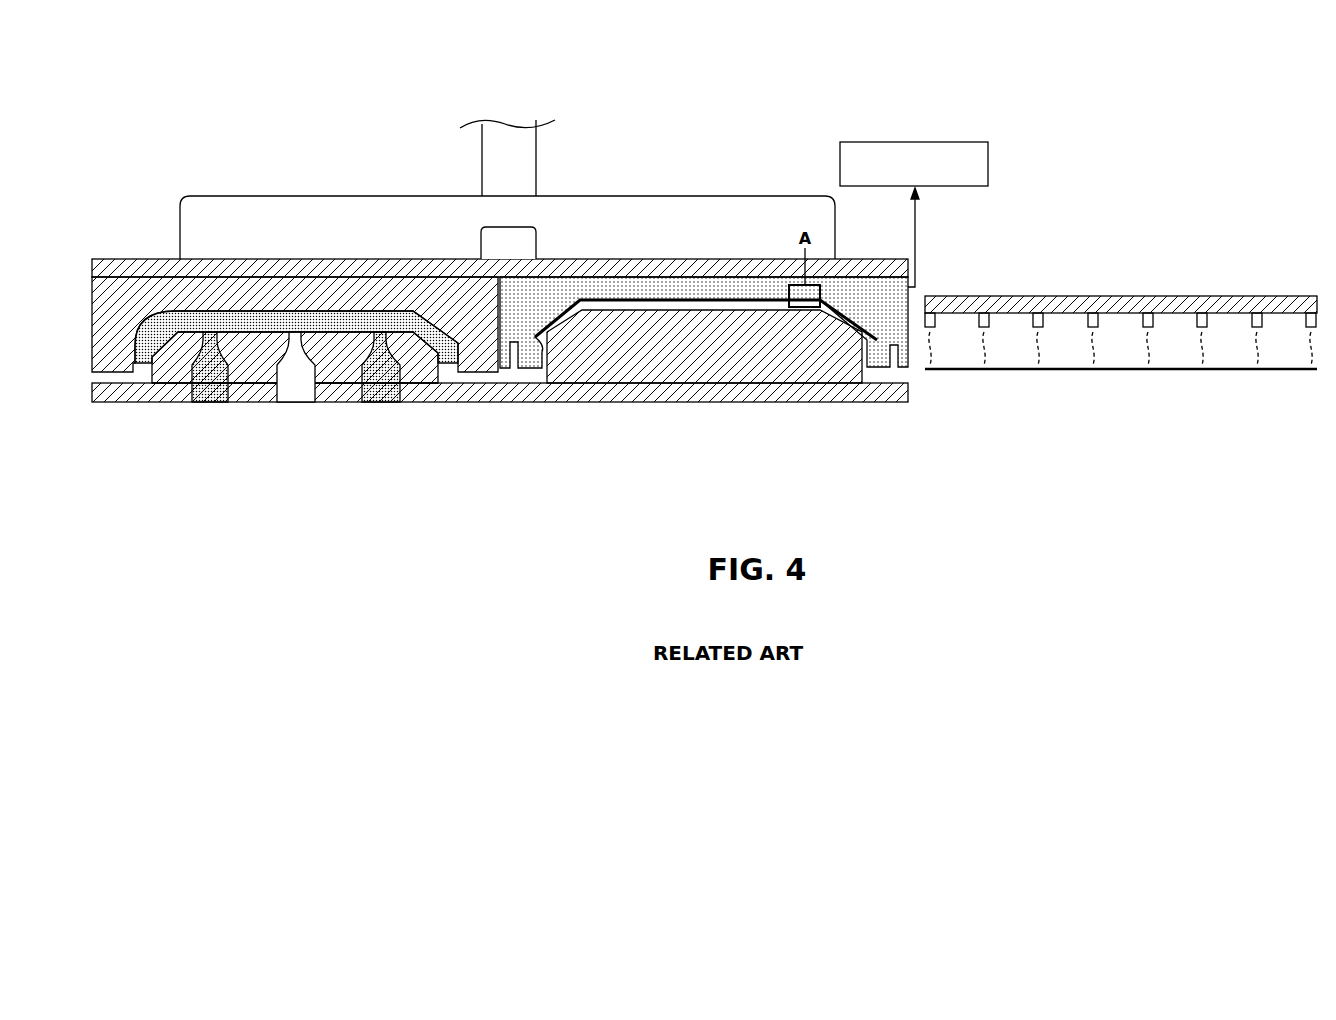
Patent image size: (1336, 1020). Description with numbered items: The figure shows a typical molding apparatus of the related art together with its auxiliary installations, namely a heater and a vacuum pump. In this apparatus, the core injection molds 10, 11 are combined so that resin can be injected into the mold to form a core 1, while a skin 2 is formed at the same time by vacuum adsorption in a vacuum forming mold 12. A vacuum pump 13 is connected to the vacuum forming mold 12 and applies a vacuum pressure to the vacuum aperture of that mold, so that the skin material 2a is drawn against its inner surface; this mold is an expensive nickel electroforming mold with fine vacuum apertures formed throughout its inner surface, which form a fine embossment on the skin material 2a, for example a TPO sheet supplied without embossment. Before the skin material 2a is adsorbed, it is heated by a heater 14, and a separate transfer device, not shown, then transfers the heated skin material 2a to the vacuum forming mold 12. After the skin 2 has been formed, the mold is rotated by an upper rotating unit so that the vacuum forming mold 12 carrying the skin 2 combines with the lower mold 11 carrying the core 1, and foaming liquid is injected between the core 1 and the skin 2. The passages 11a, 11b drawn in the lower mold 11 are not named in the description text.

The core injection mold 10 is at (120, 287).
The core 1 is at (170, 317).
The lower mold 11 is at (167, 368).
The first passage 11a is at (205, 376).
The second passage 11b is at (278, 378).
The vacuum forming mold 12 is at (750, 277).
The vacuum pump 13 is at (905, 142).
The heater 14 is at (1045, 283).
The skin 2 is at (750, 303).
The skin material 2a is at (1060, 372).